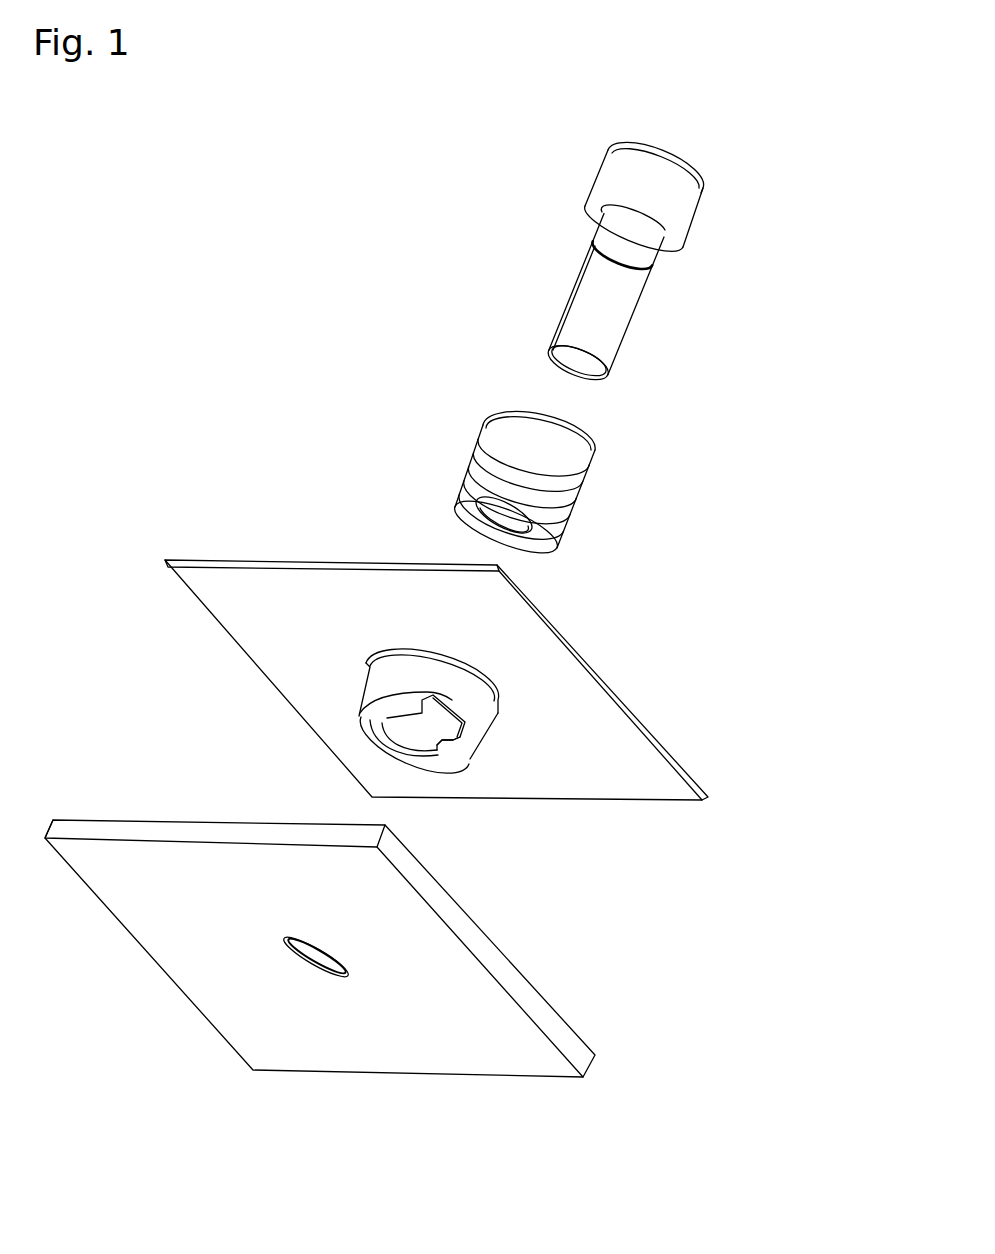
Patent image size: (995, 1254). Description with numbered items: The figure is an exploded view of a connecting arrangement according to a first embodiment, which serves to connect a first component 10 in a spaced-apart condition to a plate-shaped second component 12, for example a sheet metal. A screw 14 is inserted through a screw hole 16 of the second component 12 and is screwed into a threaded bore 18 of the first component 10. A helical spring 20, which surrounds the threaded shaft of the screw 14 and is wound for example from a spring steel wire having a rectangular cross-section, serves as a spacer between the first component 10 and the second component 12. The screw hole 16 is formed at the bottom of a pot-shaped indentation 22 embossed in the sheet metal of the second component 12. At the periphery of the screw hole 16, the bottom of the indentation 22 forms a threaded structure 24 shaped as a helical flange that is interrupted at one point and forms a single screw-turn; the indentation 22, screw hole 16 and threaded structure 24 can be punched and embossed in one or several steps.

The first component 10 is at (570, 1038).
The second component 12 is at (677, 758).
The screw 14 is at (611, 187).
The screw hole 16 is at (386, 722).
The threaded bore 18 is at (310, 950).
The helical spring 20 is at (473, 457).
The pot-shaped indentation 22 is at (475, 728).
The threaded structure 24 is at (446, 760).